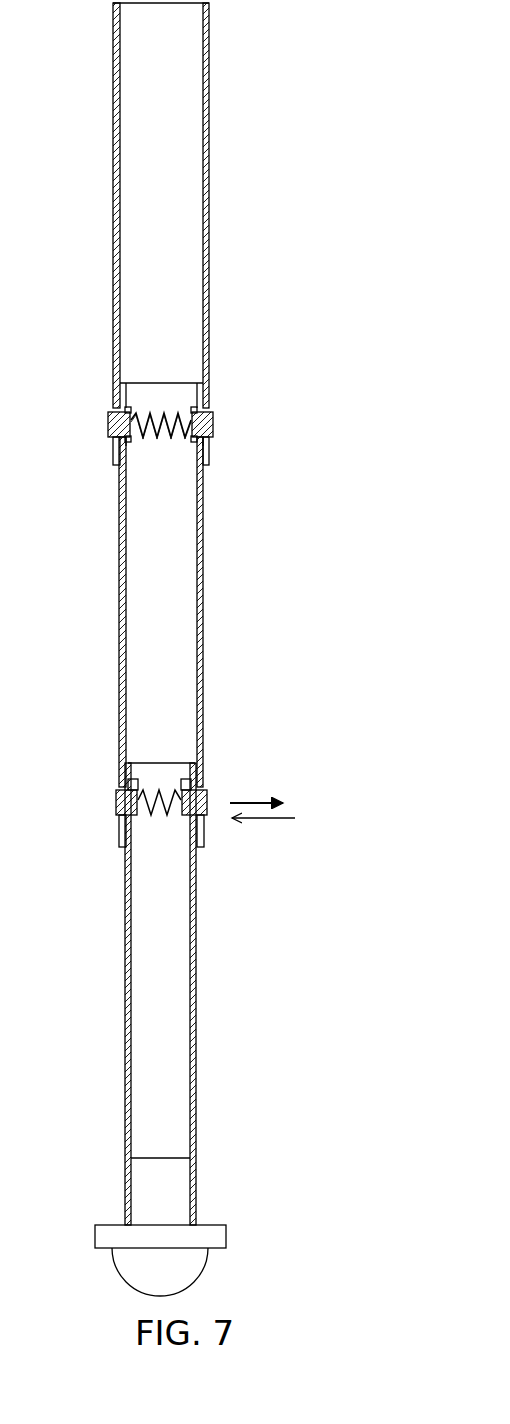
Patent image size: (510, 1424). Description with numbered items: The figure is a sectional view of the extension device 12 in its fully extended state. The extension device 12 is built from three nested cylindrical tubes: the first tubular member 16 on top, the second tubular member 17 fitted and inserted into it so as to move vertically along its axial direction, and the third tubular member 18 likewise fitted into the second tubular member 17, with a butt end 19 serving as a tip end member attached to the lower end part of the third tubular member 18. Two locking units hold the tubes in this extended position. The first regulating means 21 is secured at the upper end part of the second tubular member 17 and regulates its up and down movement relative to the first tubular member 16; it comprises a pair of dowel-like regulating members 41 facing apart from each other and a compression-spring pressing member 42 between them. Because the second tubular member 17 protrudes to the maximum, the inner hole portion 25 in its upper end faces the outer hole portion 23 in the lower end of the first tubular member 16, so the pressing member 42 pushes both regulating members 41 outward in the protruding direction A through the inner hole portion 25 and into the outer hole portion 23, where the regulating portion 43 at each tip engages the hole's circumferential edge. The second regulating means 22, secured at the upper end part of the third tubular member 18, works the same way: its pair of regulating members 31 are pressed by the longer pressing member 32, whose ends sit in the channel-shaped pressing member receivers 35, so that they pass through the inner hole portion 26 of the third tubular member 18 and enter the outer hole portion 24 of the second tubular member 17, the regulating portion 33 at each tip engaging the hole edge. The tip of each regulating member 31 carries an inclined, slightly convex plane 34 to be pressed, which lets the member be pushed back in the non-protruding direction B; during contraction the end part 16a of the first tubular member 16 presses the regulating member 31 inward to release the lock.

The extension device 12 is at (318, 93).
The first tubular member 16 is at (214, 284).
The end part in the axial direction of the first tubular member 16a is at (207, 462).
The second tubular member 17 is at (216, 576).
The third tubular member 18 is at (208, 983).
The butt end 19 is at (228, 1240).
The first regulating means 21 is at (196, 384).
The second regulating means 22 is at (173, 780).
The outer hole portion 23 is at (214, 413).
The outer hole portion 24 is at (204, 797).
The inner hole portion 25 is at (209, 443).
The inner hole portion 26 is at (200, 788).
The regulating member 31 is at (205, 823).
The pressing member 32 is at (160, 815).
The regulating portion 33 is at (208, 806).
The plane to be pressed 34 is at (208, 813).
The pressing member receiver 35 is at (192, 779).
The regulating member 41 is at (213, 422).
The pressing member 42 is at (150, 437).
The regulating portion 43 is at (212, 434).
The protruding direction A is at (262, 803).
The non-protruding direction B is at (262, 818).